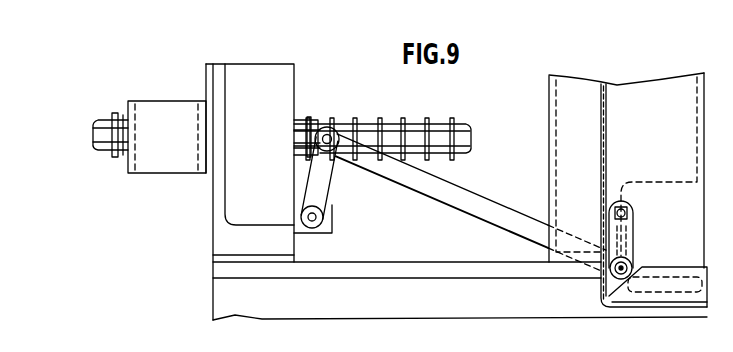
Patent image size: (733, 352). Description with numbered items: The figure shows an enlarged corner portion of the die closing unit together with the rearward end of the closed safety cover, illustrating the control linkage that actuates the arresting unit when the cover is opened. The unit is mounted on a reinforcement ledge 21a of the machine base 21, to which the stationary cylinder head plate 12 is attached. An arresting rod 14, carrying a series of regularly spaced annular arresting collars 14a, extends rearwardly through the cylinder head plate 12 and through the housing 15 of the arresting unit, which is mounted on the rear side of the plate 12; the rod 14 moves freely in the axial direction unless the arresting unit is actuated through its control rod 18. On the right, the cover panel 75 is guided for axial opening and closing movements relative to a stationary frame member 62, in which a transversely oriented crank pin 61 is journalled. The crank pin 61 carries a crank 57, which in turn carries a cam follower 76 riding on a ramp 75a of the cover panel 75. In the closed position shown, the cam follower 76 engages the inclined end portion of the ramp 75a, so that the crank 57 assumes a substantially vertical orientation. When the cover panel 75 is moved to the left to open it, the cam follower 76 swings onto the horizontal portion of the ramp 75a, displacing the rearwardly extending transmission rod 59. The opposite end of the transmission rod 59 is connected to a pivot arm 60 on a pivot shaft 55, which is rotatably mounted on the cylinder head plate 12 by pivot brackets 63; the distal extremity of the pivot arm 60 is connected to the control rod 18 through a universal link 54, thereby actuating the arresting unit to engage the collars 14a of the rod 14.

The stationary cylinder head plate 12 is at (240, 102).
The arresting rod 14 is at (124, 115).
The annular arresting collars 14a is at (403, 116).
The housing 15 is at (165, 150).
The control rod 18 is at (300, 120).
The machine base 21 is at (228, 304).
The reinforcement ledge 21a is at (225, 270).
The universal link 54 is at (316, 130).
The pivot shaft 55 is at (317, 218).
The crank 57 is at (631, 232).
The transmission rod 59 is at (503, 210).
The pivot arm 60 is at (324, 178).
The crank pin 61 is at (612, 214).
The stationary frame member 62 is at (622, 90).
The pivot brackets 63 is at (325, 230).
The cover panel 75 is at (607, 116).
The ramp 75a is at (668, 268).
The cam follower 76 is at (602, 283).